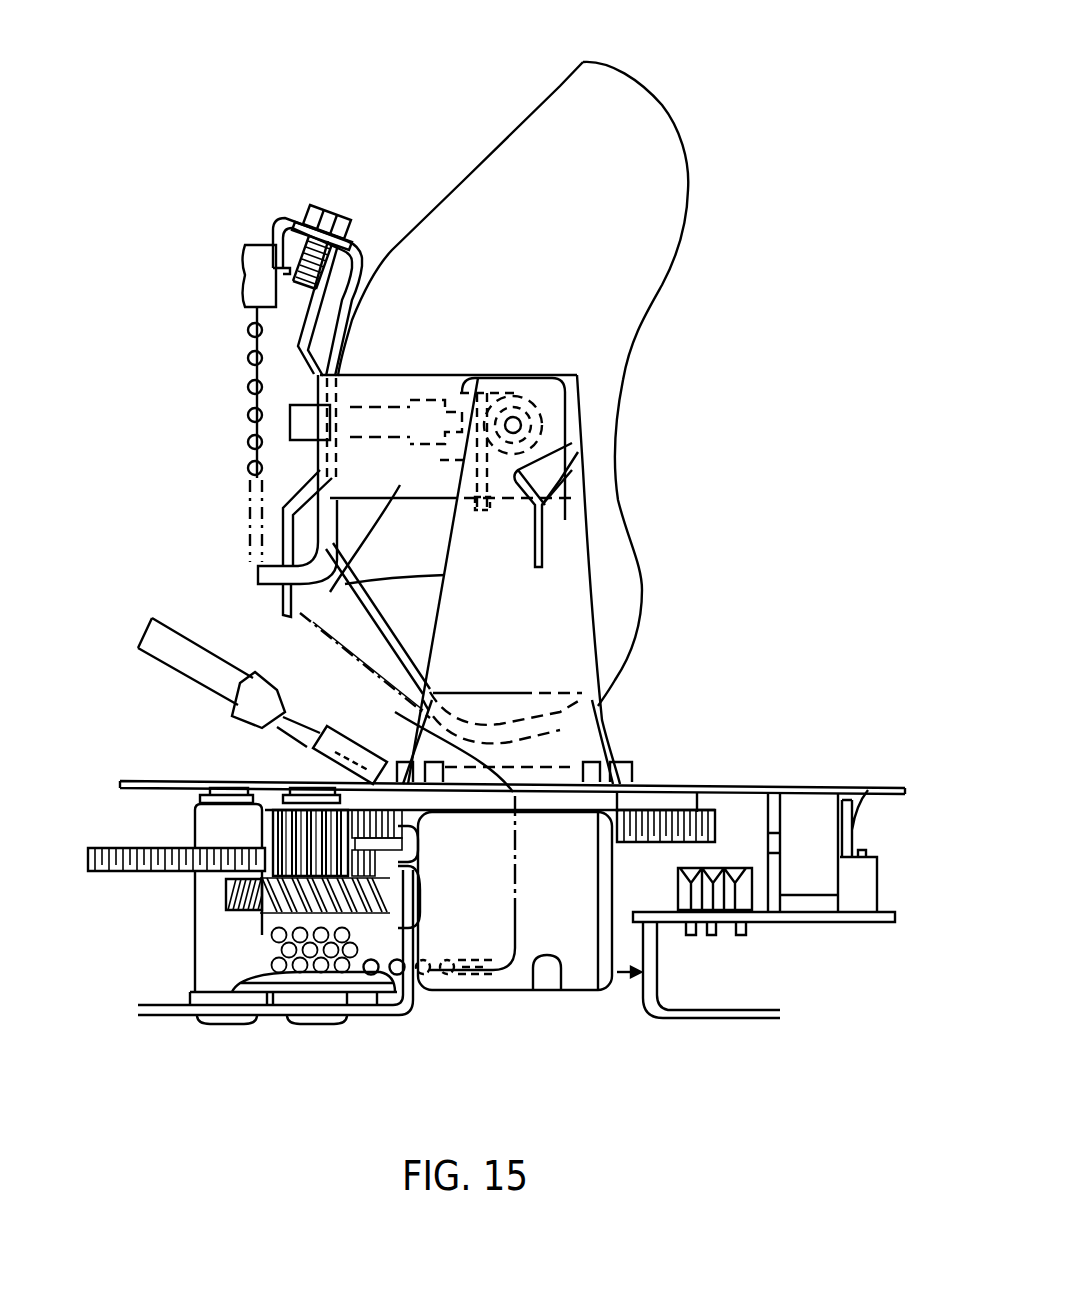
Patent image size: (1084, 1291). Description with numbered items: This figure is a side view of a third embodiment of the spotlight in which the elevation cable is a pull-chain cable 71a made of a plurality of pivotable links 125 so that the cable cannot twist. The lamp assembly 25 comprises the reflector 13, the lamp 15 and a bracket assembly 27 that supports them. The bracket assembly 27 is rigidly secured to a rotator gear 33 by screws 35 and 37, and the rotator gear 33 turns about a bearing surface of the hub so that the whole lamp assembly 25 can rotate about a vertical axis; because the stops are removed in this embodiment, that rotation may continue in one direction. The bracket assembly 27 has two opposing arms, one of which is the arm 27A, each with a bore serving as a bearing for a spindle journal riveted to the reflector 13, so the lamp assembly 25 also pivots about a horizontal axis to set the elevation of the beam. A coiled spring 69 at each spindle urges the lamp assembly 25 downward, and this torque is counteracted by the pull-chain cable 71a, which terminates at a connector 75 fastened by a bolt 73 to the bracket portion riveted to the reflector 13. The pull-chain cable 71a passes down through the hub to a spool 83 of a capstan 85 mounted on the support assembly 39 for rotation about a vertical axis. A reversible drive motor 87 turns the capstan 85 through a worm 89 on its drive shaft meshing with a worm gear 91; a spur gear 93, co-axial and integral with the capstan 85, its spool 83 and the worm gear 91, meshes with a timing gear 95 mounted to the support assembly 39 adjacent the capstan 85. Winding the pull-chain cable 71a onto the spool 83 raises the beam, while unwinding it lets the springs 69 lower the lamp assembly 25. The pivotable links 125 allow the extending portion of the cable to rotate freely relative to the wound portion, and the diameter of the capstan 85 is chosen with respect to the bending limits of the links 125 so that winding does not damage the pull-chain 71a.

The reflector 13 is at (523, 240).
The lamp 15 is at (460, 390).
The lamp assembly 25 is at (676, 405).
The bracket assembly 27 is at (445, 572).
The opposing arm 27A is at (541, 641).
The rotator gear 33 is at (710, 808).
The screw 35 is at (628, 758).
The screw 37 is at (410, 747).
The support assembly 39 is at (660, 980).
The coiled spring 69 is at (547, 531).
The pull-chain cable 71a is at (250, 412).
The bolt 73 is at (347, 205).
The connector 75 is at (270, 230).
The spool 83 is at (278, 937).
The capstan 85 is at (198, 893).
The drive motor 87 is at (577, 907).
The worm 89 is at (418, 995).
The worm gear 91 is at (223, 903).
The spur gear 93 is at (277, 820).
The timing gear 95 is at (93, 848).
The pivotable links 125 is at (248, 387).